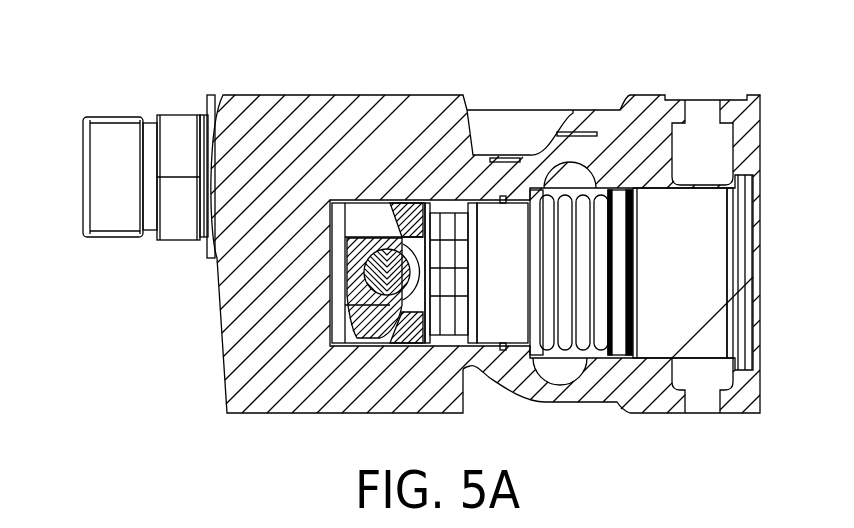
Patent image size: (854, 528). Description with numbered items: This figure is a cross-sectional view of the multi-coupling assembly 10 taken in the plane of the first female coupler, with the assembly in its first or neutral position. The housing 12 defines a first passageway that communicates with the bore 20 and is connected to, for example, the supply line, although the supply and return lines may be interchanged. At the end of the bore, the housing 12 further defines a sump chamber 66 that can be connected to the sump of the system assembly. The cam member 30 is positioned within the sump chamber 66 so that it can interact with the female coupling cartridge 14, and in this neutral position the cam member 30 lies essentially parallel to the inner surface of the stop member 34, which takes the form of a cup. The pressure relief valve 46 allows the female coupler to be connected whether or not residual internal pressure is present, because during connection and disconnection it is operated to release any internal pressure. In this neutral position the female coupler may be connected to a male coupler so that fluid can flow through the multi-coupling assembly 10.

The multi-coupling assembly 10 is at (132, 67).
The housing 12 is at (290, 95).
The female coupling cartridge 14 is at (483, 177).
The bore 20 is at (592, 185).
The cam member 30 is at (333, 293).
The stop member 34 is at (410, 212).
The pressure relief valve 46 is at (435, 267).
The sump chamber 66 is at (363, 215).